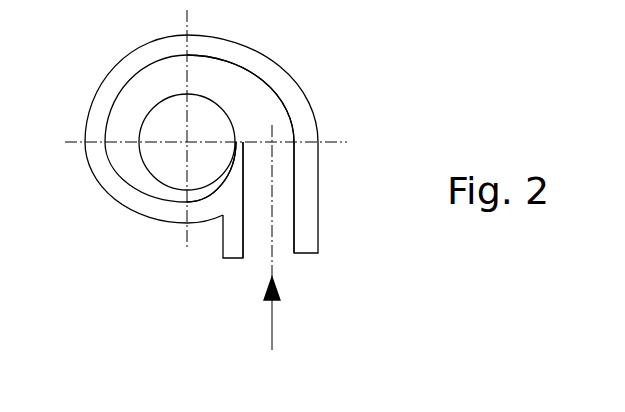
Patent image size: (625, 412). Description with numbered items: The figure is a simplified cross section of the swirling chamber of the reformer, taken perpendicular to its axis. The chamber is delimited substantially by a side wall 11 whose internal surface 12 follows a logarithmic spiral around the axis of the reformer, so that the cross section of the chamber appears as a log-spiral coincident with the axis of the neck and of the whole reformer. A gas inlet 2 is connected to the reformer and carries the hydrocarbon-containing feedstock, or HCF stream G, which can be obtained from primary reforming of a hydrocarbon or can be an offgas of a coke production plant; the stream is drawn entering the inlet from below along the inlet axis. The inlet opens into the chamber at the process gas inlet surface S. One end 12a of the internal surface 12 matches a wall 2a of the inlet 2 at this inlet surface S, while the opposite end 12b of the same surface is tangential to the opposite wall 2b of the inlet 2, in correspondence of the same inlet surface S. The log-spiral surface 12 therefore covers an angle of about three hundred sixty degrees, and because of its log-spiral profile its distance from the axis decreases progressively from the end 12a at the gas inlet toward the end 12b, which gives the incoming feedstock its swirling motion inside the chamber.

The side wall 11 is at (103, 172).
The internal surface 12 is at (154, 79).
The end of the surface 12a is at (281, 126).
The opposite end of the surface 12b is at (237, 174).
The gas inlet 2 is at (277, 197).
The wall of the HCF inlet 2a is at (286, 229).
The opposite wall of the inlet 2b is at (255, 216).
The process gas inlet surface S is at (328, 140).
The HCF stream G is at (284, 313).